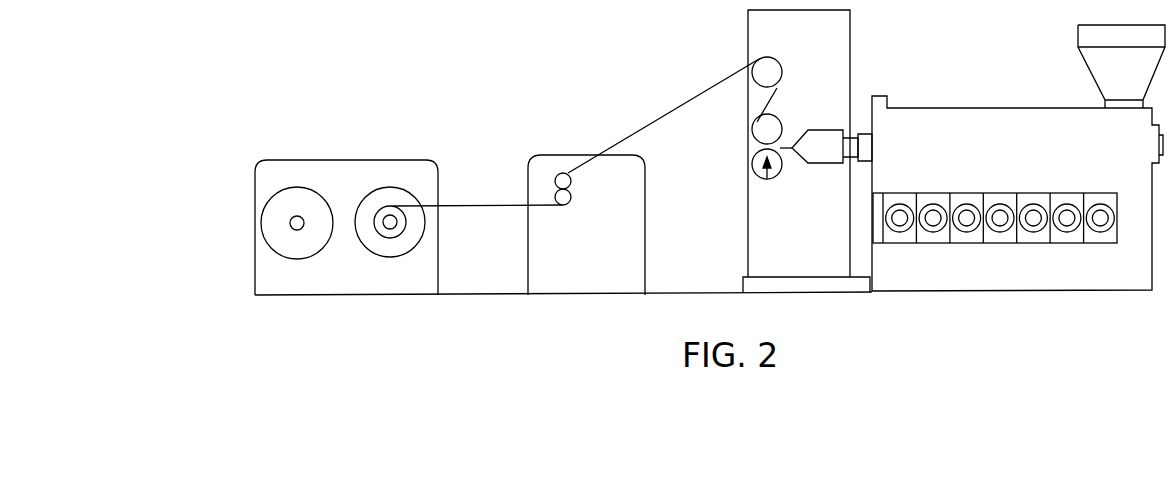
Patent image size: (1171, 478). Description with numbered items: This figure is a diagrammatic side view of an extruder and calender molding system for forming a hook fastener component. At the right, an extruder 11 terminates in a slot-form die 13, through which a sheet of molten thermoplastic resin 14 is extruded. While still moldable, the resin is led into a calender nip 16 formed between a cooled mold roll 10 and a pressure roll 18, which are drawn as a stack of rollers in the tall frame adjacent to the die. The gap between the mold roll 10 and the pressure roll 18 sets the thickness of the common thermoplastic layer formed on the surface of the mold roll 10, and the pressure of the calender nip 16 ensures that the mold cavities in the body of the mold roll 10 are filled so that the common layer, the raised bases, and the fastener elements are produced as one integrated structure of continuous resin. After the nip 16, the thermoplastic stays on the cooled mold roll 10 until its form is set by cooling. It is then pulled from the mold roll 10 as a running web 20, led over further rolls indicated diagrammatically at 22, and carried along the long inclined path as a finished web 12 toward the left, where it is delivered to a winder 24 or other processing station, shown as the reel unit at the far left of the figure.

The mold roll 10 is at (750, 131).
The extruder 11 is at (1028, 166).
The finished web 12 is at (674, 108).
The slot-form die 13 is at (817, 165).
The sheet of molten thermoplastic resin 14 is at (784, 150).
The calender nip 16 is at (772, 180).
The pressure roll 18 is at (750, 165).
The running web 20 is at (775, 92).
The further rolls 22 is at (756, 56).
The winder 24 is at (385, 158).